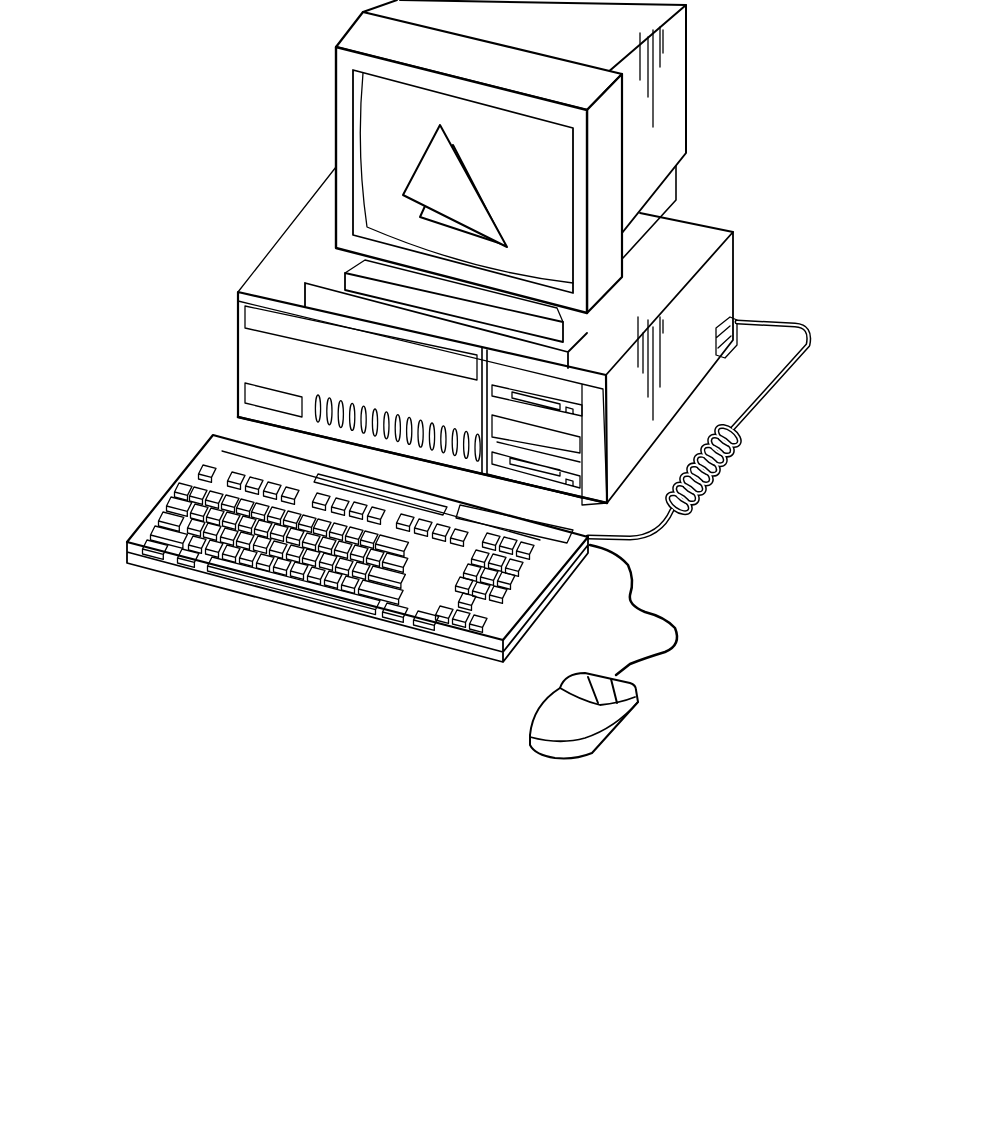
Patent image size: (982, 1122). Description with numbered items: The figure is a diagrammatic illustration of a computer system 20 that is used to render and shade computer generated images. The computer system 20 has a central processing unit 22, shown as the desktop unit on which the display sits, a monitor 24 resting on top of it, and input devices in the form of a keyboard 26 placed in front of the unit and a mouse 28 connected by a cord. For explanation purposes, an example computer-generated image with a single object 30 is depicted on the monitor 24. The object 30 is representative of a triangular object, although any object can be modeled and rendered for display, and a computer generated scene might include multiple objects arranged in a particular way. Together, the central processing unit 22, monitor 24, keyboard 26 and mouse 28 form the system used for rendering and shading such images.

The computer system 20 is at (199, 195).
The central processing unit (CPU) 22 is at (692, 247).
The monitor 24 is at (657, 150).
The keyboard 26 is at (212, 437).
The mouse 28 is at (548, 716).
The object 30 is at (432, 175).